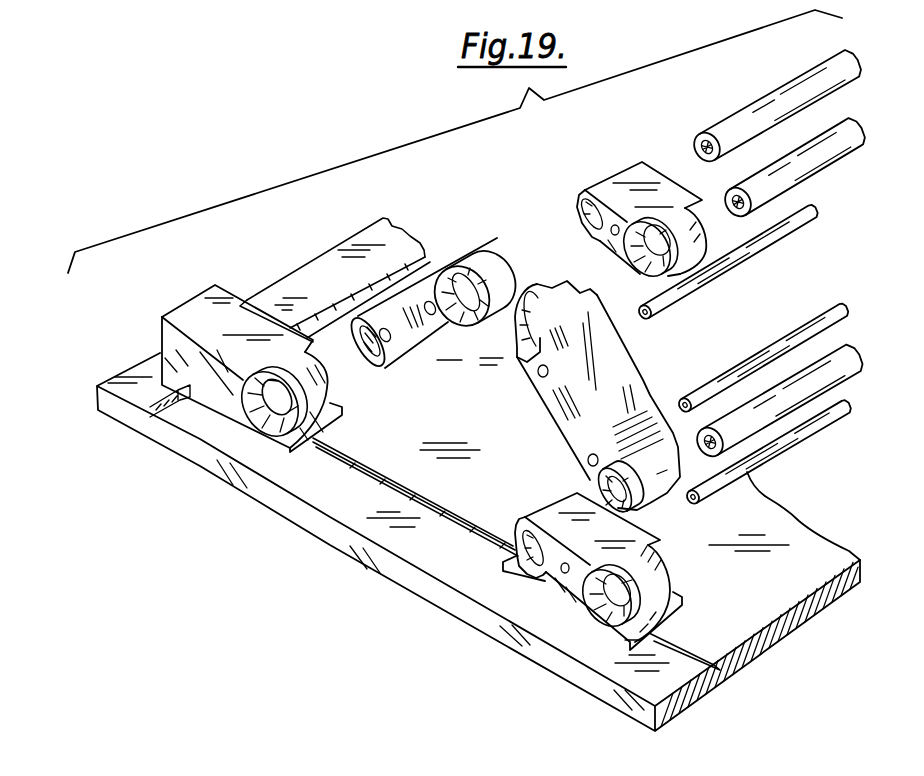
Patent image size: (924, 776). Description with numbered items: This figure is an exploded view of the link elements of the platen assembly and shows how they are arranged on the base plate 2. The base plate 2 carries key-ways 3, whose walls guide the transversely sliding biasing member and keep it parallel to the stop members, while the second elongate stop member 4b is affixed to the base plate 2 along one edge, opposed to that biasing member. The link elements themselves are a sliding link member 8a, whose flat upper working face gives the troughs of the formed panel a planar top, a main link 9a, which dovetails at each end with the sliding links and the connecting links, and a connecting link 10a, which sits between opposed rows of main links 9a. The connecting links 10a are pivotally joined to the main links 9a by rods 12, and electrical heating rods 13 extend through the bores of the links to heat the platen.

The base plate 2 is at (802, 611).
The key-ways 3 is at (692, 651).
The second elongate stop member 4b is at (197, 302).
The sliding link member 8a is at (560, 508).
The main link 9a is at (409, 348).
The connecting link 10a is at (622, 178).
The rods 12 is at (789, 88).
The electrical heating rods 13 is at (742, 263).